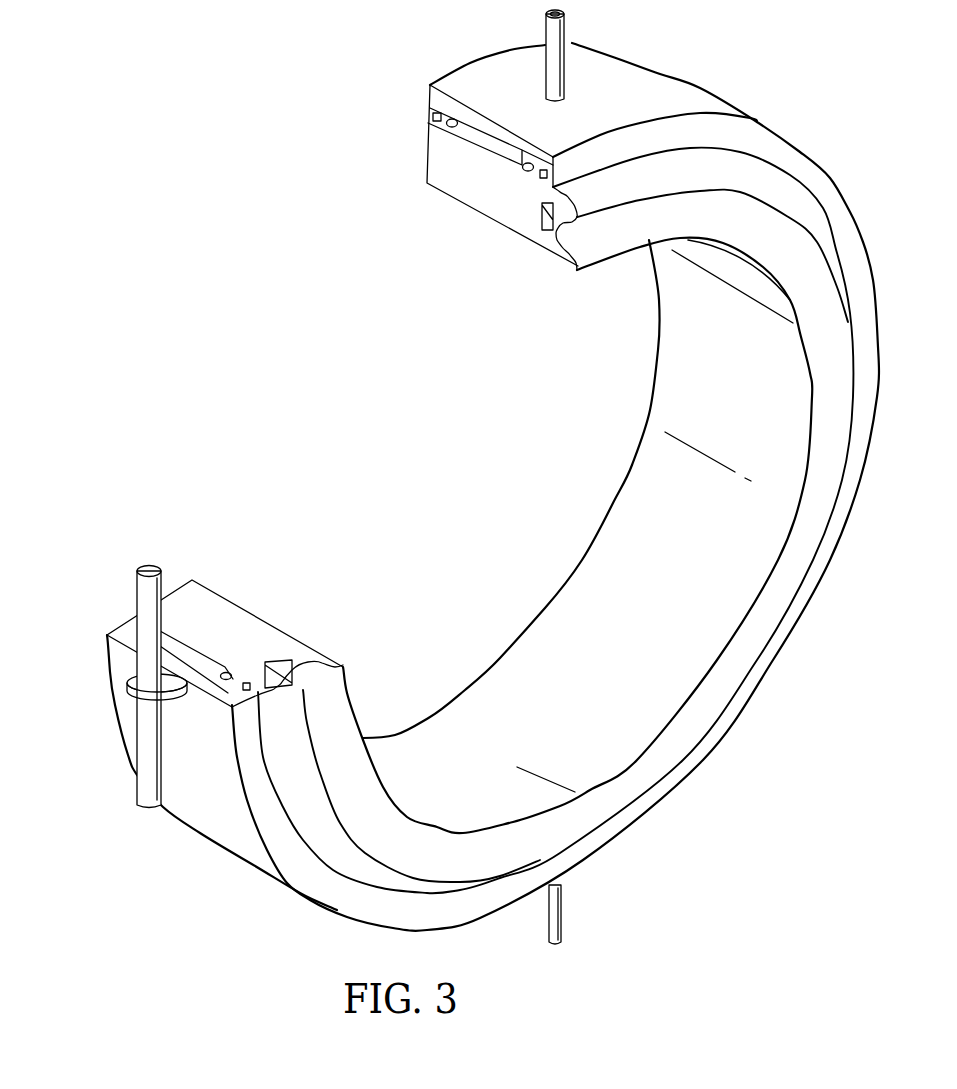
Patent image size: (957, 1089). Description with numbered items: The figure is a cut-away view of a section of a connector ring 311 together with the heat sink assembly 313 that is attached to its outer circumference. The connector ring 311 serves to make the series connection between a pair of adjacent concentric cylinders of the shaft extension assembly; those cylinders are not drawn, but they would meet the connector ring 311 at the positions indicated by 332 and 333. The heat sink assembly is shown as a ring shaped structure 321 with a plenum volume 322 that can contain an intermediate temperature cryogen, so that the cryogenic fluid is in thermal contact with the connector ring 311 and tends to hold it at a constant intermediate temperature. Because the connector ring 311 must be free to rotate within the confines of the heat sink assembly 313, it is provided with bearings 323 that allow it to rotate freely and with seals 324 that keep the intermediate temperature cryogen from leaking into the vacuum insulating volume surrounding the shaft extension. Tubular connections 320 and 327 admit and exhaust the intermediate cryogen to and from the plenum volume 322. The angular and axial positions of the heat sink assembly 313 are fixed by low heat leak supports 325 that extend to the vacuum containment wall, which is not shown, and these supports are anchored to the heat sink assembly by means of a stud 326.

The connector ring 311 is at (433, 167).
The heat sink assembly 313 is at (102, 690).
The tubular connection 320 is at (566, 30).
The ring shaped structure 321 is at (376, 353).
The plenum volume 322 is at (473, 137).
The bearings 323 is at (433, 115).
The seals 324 is at (450, 125).
The low heat leak supports 325 is at (133, 783).
The stud 326 is at (128, 682).
The tubular connection 327 is at (566, 905).
The position where a concentric cylinder meets the connector ring 332 is at (605, 247).
The position where a concentric cylinder meets the connector ring 333 is at (603, 200).